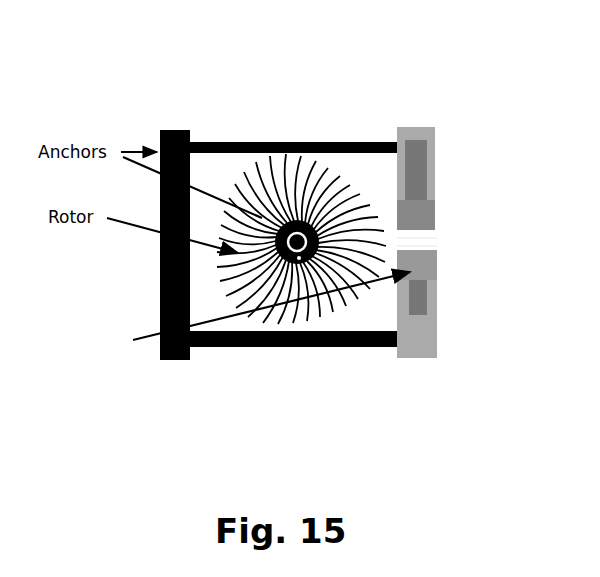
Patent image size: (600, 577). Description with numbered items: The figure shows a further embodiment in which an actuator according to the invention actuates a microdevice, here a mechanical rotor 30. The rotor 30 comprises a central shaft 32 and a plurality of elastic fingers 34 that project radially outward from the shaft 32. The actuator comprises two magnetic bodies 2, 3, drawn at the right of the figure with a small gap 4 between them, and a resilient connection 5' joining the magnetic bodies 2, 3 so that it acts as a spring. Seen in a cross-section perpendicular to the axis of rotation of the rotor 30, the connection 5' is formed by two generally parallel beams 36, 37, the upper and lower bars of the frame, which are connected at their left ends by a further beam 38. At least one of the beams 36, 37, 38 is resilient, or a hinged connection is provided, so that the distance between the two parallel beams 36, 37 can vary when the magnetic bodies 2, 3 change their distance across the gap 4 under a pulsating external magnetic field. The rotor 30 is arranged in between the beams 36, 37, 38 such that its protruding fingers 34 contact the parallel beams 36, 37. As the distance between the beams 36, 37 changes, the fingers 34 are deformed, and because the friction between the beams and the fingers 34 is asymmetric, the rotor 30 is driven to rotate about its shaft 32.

The resilient connection 5' is at (252, 202).
The mechanical rotor 30 is at (333, 150).
The parallel beam 36 is at (265, 143).
The parallel beam 37 is at (312, 350).
The further beam 38 is at (160, 296).
The magnetic body 3 is at (434, 205).
The elastic fingers 34 is at (375, 209).
The gap 4 is at (425, 240).
The shaft 32 is at (418, 272).
The magnetic body 2 is at (428, 302).